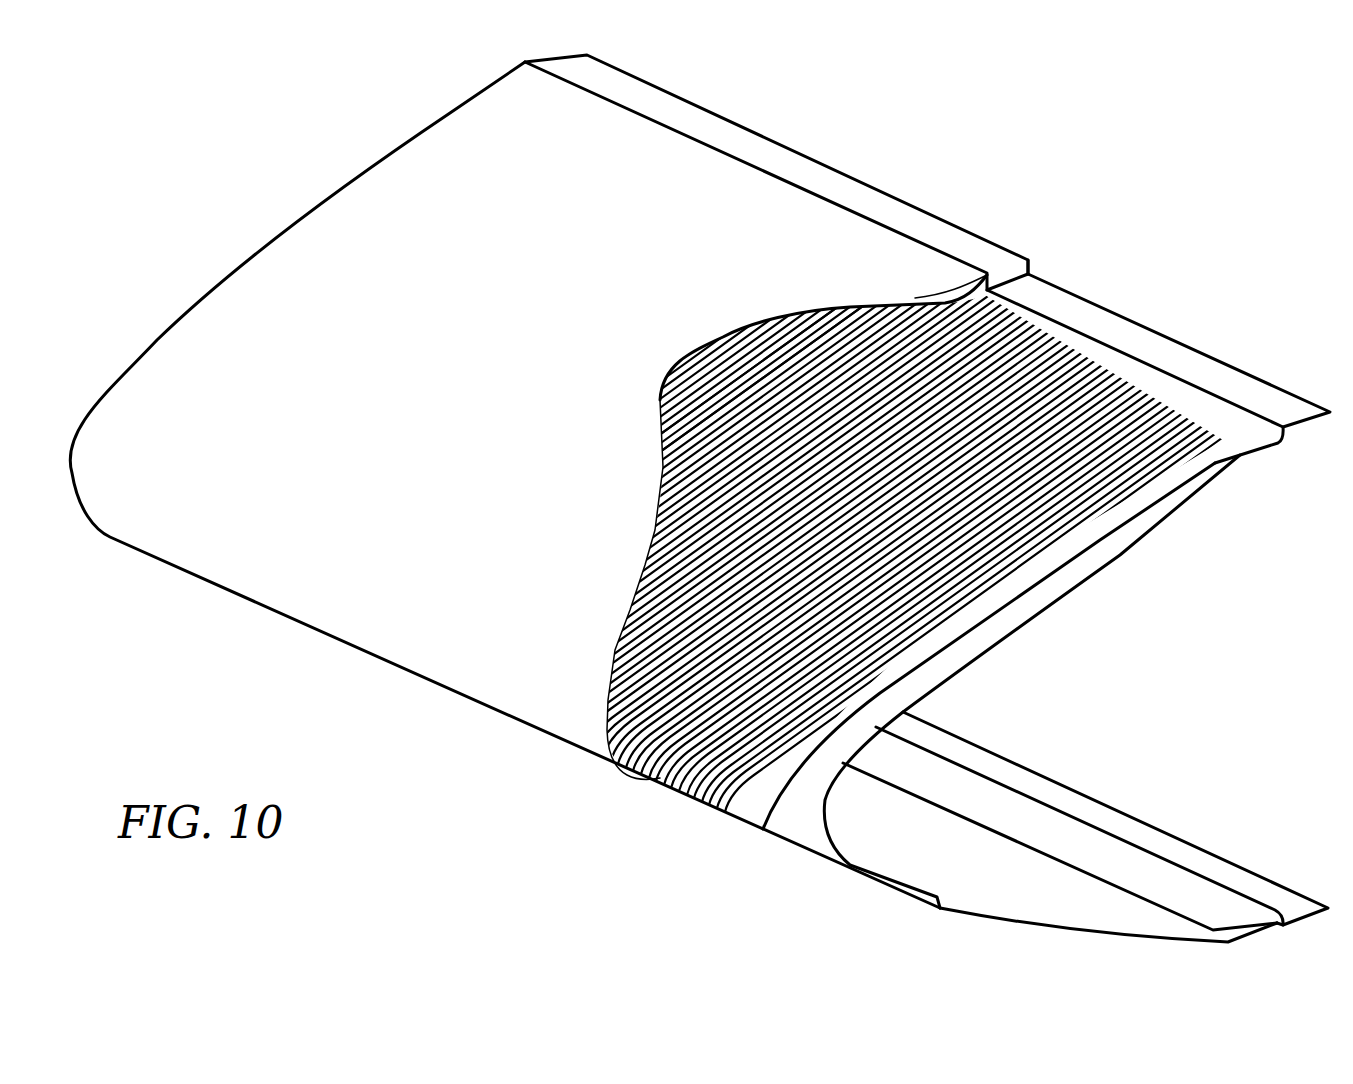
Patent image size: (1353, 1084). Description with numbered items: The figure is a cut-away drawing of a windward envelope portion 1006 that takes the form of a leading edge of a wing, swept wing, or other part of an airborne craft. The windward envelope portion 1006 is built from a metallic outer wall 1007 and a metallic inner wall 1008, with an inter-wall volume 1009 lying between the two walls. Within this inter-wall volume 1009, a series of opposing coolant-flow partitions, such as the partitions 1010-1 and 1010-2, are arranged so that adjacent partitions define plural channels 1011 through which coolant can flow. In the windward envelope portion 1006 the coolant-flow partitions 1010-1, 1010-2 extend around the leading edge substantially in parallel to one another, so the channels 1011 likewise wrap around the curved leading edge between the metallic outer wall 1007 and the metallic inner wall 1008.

The windward envelope portion 1006 is at (145, 262).
The metallic outer wall 1007 is at (577, 194).
The metallic inner wall 1008 is at (942, 853).
The inter-wall volume 1009 is at (1091, 352).
The coolant-flow partition 1010-1 is at (803, 343).
The coolant-flow partition 1010-2 is at (838, 332).
The channel 1011 is at (823, 340).